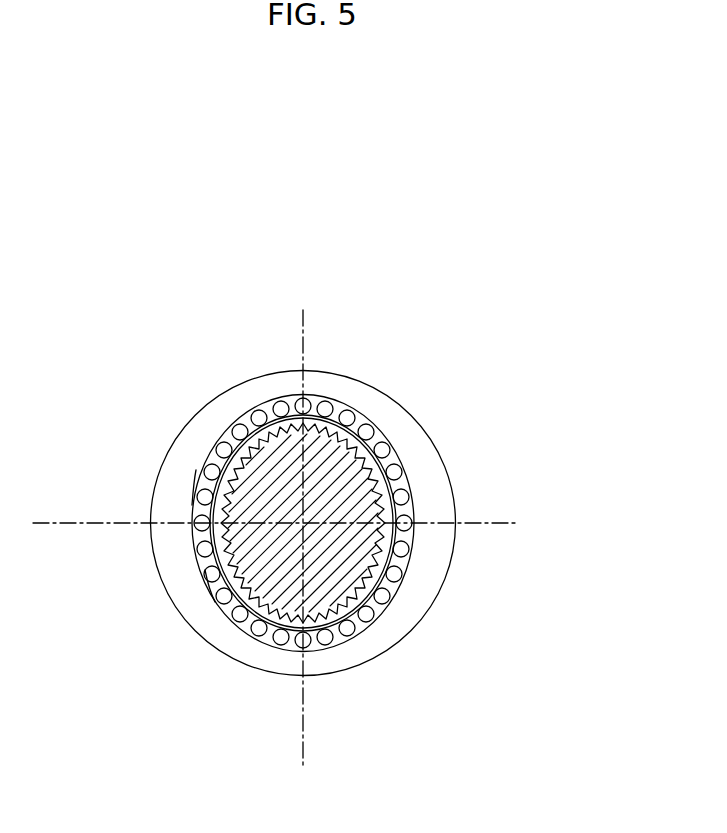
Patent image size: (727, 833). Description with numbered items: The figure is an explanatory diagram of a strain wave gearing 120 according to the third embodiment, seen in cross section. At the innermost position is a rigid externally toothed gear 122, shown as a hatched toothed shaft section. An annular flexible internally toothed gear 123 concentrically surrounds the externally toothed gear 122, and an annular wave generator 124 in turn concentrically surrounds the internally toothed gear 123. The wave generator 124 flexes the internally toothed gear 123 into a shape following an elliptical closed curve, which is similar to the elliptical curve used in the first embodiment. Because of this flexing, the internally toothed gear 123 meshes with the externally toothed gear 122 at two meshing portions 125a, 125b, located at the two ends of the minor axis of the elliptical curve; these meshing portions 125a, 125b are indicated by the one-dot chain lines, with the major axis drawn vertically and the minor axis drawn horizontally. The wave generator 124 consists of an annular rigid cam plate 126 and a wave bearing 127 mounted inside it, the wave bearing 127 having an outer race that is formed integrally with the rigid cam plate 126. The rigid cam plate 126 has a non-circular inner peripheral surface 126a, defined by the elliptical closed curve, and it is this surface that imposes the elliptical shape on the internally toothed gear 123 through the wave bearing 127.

The strain wave gearing 120 is at (483, 332).
The rigid externally toothed gear 122 is at (320, 500).
The flexible internally toothed gear 123 is at (333, 410).
The wave generator 124 is at (230, 377).
The meshing portion 125a is at (413, 533).
The meshing portion 125b is at (192, 508).
The rigid cam plate 126 is at (167, 543).
The non-circular inner peripheral surface 126a is at (200, 477).
The wave bearing 127 is at (208, 582).